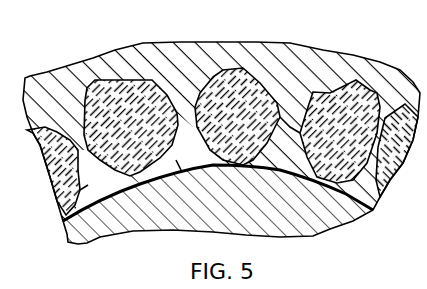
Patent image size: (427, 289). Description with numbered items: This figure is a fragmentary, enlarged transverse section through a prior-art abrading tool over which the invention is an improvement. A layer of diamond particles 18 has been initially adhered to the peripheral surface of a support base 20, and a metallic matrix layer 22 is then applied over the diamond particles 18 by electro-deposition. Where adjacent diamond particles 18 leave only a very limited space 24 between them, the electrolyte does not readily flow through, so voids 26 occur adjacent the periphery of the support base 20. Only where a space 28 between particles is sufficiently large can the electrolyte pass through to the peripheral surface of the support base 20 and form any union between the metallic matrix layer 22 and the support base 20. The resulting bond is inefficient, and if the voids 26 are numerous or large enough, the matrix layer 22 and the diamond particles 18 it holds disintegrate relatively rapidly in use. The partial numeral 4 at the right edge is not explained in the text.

The diamond particles 18 is at (120, 108).
The support base 20 is at (331, 222).
The metallic matrix layer 22 is at (310, 63).
The limited space 24 is at (85, 222).
The voids 26 is at (100, 182).
The space 28 is at (290, 127).
The partially visible numeral (24) 4 is at (420, 167).